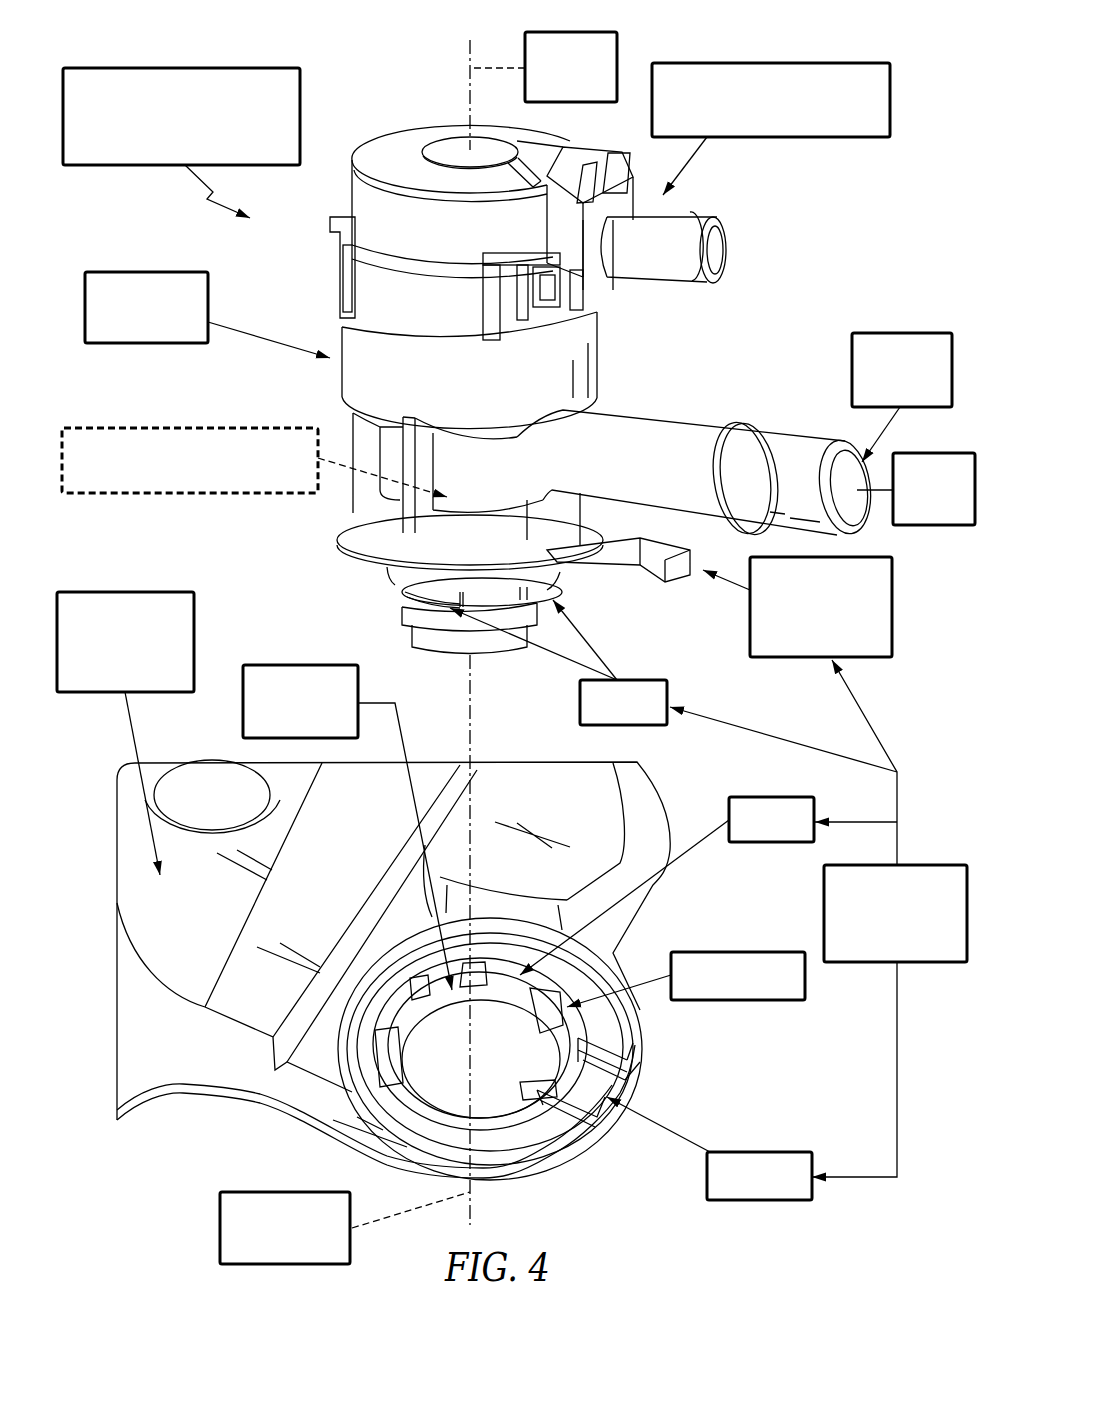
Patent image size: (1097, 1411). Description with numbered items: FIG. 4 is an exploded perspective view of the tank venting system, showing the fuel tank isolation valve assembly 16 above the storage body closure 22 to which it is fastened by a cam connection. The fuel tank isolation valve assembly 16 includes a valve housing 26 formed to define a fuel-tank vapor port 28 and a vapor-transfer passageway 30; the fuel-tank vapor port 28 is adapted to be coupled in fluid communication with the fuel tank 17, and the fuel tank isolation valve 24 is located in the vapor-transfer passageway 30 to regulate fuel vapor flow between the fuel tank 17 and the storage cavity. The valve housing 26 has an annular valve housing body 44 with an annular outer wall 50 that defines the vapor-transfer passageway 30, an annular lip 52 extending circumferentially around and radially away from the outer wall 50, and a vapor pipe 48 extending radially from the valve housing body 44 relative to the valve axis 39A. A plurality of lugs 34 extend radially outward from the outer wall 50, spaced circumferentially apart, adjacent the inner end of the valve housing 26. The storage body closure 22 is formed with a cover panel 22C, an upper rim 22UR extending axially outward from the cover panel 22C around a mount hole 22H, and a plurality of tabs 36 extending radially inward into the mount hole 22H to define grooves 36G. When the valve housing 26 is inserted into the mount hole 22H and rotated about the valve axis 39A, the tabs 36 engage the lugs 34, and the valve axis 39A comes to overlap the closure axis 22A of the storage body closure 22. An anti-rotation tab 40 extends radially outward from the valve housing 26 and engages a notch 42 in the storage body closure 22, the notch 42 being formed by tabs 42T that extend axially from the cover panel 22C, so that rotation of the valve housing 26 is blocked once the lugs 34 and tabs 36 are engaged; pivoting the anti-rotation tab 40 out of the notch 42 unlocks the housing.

The fuel tank isolation valve assembly 16 is at (175, 68).
The fuel tank isolation valve 24 is at (812, 137).
The valve housing 26 is at (118, 272).
The valve housing body 44 is at (325, 352).
The valve axis 39A is at (617, 52).
The vapor-transfer passageway 30 is at (140, 428).
The annular outer wall 50 is at (383, 447).
The annular lip 52 is at (327, 534).
The lugs 34 is at (580, 700).
The anti-rotation tab 40 is at (892, 605).
The fuel-tank vapor port 28 is at (900, 333).
The vapor pipe 48 is at (700, 395).
The fuel tank 17 is at (930, 525).
The storage body closure 22 is at (125, 592).
The cover panel 22C is at (187, 873).
The upper rim 22UR is at (395, 943).
The mount hole 22H is at (295, 665).
The tabs 36 is at (760, 842).
The grooves 36G is at (790, 1000).
The notch 42 is at (755, 1200).
The tabs 42T is at (625, 1042).
The closure axis 22A is at (220, 1223).